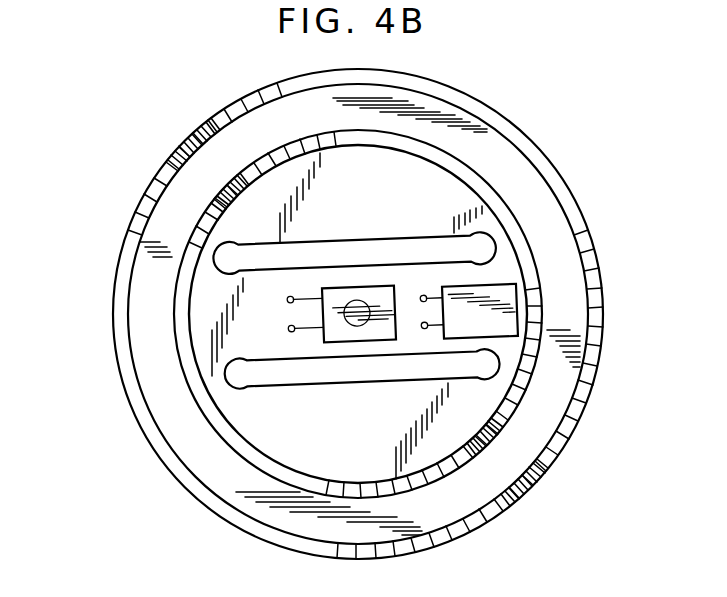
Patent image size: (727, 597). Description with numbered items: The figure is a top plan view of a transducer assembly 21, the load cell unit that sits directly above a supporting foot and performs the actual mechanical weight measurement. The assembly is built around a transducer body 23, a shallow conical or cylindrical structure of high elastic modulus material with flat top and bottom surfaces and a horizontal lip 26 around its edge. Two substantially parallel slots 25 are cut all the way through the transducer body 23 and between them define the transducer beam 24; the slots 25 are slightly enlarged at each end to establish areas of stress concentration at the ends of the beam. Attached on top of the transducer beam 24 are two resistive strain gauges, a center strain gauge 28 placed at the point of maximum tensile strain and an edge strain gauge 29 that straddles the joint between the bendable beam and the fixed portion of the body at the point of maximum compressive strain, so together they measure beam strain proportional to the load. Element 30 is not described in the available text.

The transducer assembly 21 is at (133, 175).
The transducer body 23 is at (464, 428).
The transducer beam 24 is at (250, 300).
The slots 25 is at (313, 245).
The horizontal lip 26 is at (452, 513).
The center strain gauge 28 is at (352, 332).
The edge strain gauge 29 is at (498, 290).
The connecting leads 30 is at (421, 303).